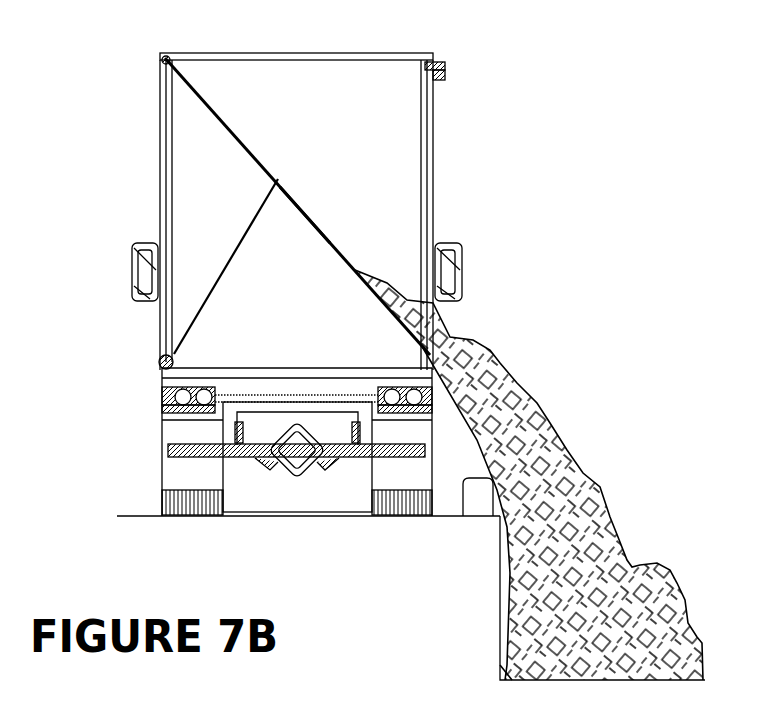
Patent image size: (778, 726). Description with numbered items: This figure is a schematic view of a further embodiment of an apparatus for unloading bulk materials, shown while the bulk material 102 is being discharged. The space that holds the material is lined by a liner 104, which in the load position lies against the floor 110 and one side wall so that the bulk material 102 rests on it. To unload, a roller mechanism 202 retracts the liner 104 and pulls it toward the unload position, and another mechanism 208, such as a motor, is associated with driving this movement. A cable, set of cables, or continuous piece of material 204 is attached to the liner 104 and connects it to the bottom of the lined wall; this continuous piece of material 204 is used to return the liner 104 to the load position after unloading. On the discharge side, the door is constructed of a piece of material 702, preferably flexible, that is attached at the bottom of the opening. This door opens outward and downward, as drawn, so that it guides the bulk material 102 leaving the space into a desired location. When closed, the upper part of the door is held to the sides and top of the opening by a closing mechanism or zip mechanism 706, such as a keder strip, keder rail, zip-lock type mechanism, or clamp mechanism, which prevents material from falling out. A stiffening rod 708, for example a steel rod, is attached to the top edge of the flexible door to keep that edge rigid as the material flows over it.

The roller mechanism 202 is at (143, 57).
The closing mechanism or zip mechanism 706 is at (448, 65).
The liner 104 is at (307, 220).
The cable, set of cables, or continuous piece of material 204 is at (225, 240).
The floor 110 is at (200, 370).
The mechanism 208 is at (143, 372).
The bulk material 102 is at (523, 423).
The piece of material 702 is at (508, 566).
The stiffening rod 708 is at (505, 665).